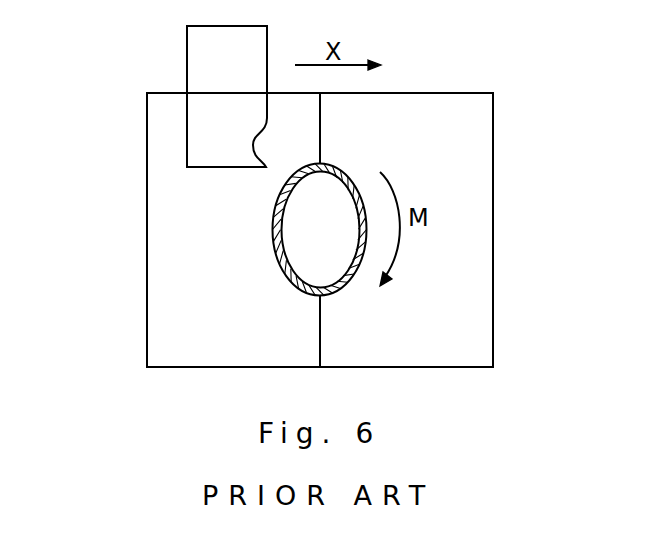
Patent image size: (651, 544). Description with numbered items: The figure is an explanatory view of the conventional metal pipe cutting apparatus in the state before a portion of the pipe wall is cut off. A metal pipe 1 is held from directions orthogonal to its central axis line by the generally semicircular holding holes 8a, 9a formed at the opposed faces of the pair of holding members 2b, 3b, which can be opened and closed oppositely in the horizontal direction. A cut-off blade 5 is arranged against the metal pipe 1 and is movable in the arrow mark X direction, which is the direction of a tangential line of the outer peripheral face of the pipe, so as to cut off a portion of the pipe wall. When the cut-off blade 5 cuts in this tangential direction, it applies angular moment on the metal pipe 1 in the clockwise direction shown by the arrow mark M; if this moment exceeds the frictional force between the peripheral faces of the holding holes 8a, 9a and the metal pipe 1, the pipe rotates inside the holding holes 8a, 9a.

The metal pipe 1 is at (278, 263).
The cut-off blade 5 is at (197, 56).
The holding member 2b is at (163, 322).
The holding member 3b is at (467, 326).
The holding hole 8a is at (341, 289).
The holding hole 9a is at (277, 221).